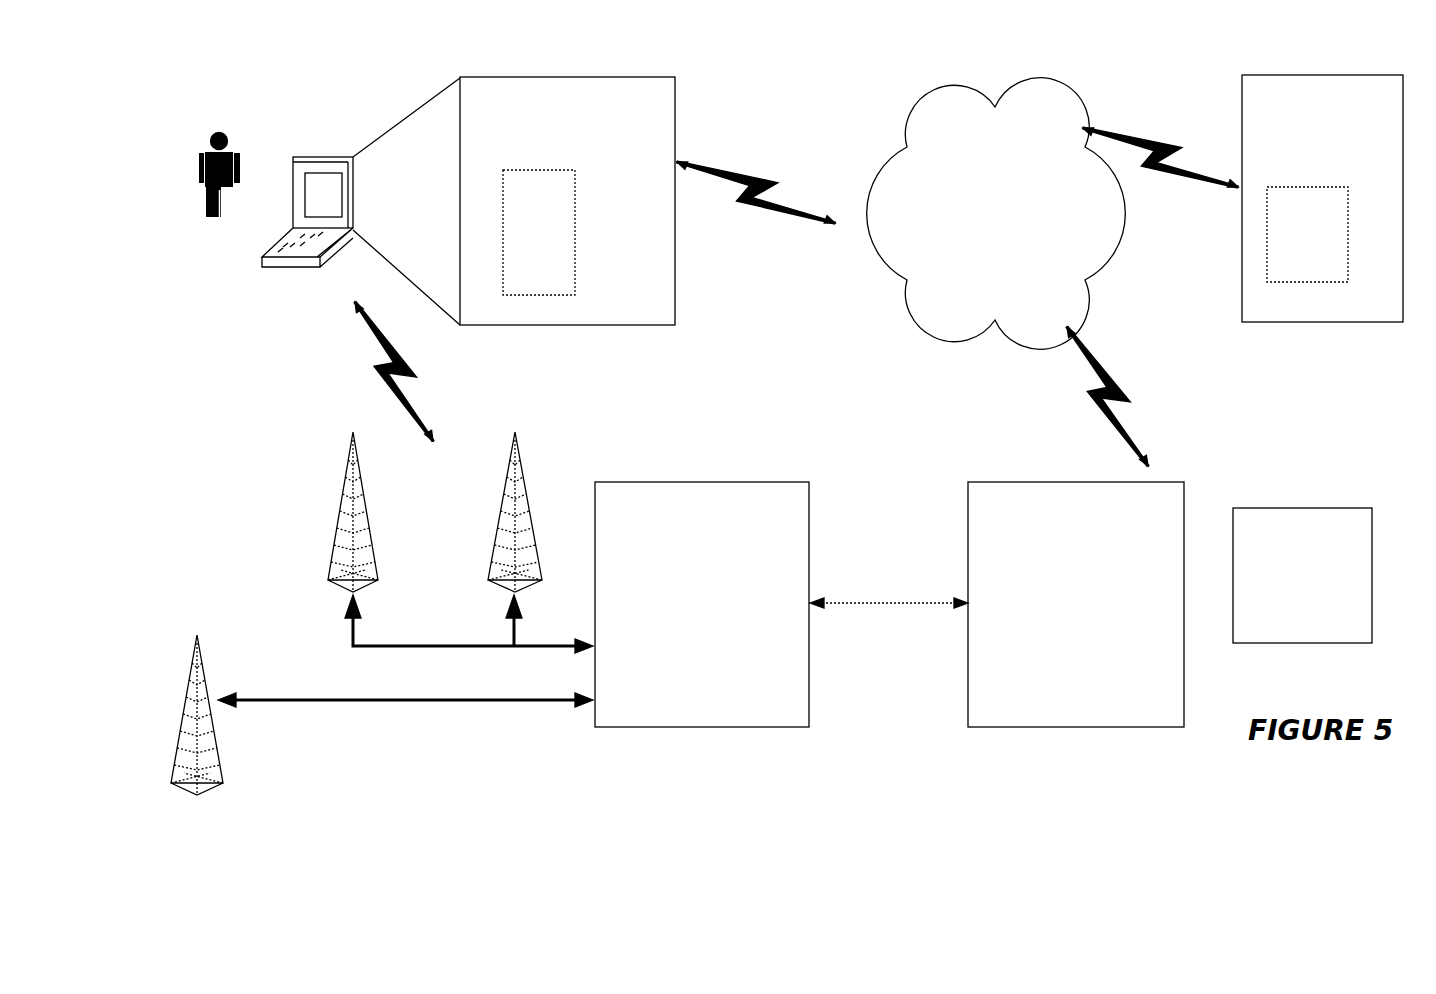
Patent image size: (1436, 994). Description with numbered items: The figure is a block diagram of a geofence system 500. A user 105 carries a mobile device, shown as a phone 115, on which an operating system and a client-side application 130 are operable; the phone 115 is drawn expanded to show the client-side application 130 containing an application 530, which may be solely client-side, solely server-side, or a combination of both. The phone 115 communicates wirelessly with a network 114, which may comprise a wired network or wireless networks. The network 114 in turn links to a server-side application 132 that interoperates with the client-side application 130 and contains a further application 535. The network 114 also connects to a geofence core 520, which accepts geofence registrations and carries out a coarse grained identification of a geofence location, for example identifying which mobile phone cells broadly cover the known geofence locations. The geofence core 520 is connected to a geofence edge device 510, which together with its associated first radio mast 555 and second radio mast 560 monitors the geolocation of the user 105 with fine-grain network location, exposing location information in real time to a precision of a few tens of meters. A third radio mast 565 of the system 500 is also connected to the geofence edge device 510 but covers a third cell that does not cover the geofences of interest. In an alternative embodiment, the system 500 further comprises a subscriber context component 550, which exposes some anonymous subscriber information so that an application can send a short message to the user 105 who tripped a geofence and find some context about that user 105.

The geofence system 500 is at (303, 110).
The user 105 is at (220, 222).
The phone 115 is at (298, 283).
The client-side application 130 is at (676, 293).
The application 530 is at (575, 227).
The network 114 is at (913, 120).
The server-side application 132 is at (1278, 323).
The application 535 is at (1307, 187).
The subscriber context component 550 is at (1263, 506).
The geofence edge device 510 is at (593, 740).
The geofence core 520 is at (993, 728).
The first radio mast 555 is at (343, 612).
The second radio mast 560 is at (487, 538).
The third radio mast 565 is at (222, 767).